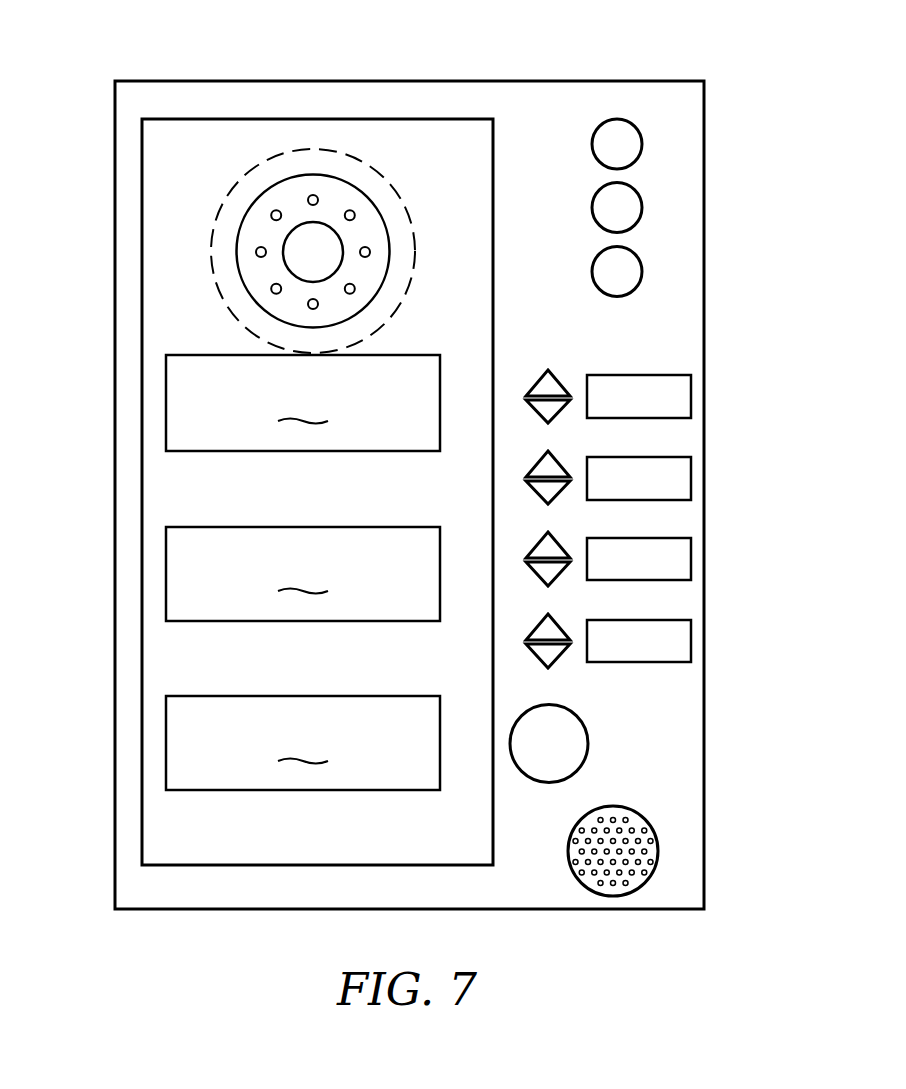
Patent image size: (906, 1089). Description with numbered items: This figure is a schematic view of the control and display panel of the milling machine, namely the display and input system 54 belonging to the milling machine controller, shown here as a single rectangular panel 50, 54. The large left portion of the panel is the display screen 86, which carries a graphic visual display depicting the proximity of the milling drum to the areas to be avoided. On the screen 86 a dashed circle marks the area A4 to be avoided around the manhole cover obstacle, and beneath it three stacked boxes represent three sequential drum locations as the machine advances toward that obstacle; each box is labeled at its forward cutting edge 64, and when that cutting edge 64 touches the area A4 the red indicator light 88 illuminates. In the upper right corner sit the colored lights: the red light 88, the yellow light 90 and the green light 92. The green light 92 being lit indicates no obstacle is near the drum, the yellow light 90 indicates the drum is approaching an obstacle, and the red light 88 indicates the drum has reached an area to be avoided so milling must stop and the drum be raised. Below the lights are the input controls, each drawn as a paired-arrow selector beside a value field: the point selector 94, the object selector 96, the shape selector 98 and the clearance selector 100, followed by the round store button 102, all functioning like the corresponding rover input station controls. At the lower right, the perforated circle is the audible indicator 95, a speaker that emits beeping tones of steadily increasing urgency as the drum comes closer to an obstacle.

The operating unit 50 is at (409, 471).
The display and input system 54 is at (290, 80).
The display screen 86 is at (142, 827).
The area to be avoided A4 is at (397, 190).
The forward cutting edge 64 is at (228, 355).
The red light 88 is at (642, 143).
The yellow light 90 is at (642, 207).
The green light 92 is at (642, 271).
The point selector 94 is at (540, 382).
The object selector 96 is at (530, 472).
The shape selector 98 is at (532, 551).
The clearance selector 100 is at (535, 632).
The store button 102 is at (588, 728).
The audible indicator 95 is at (658, 852).